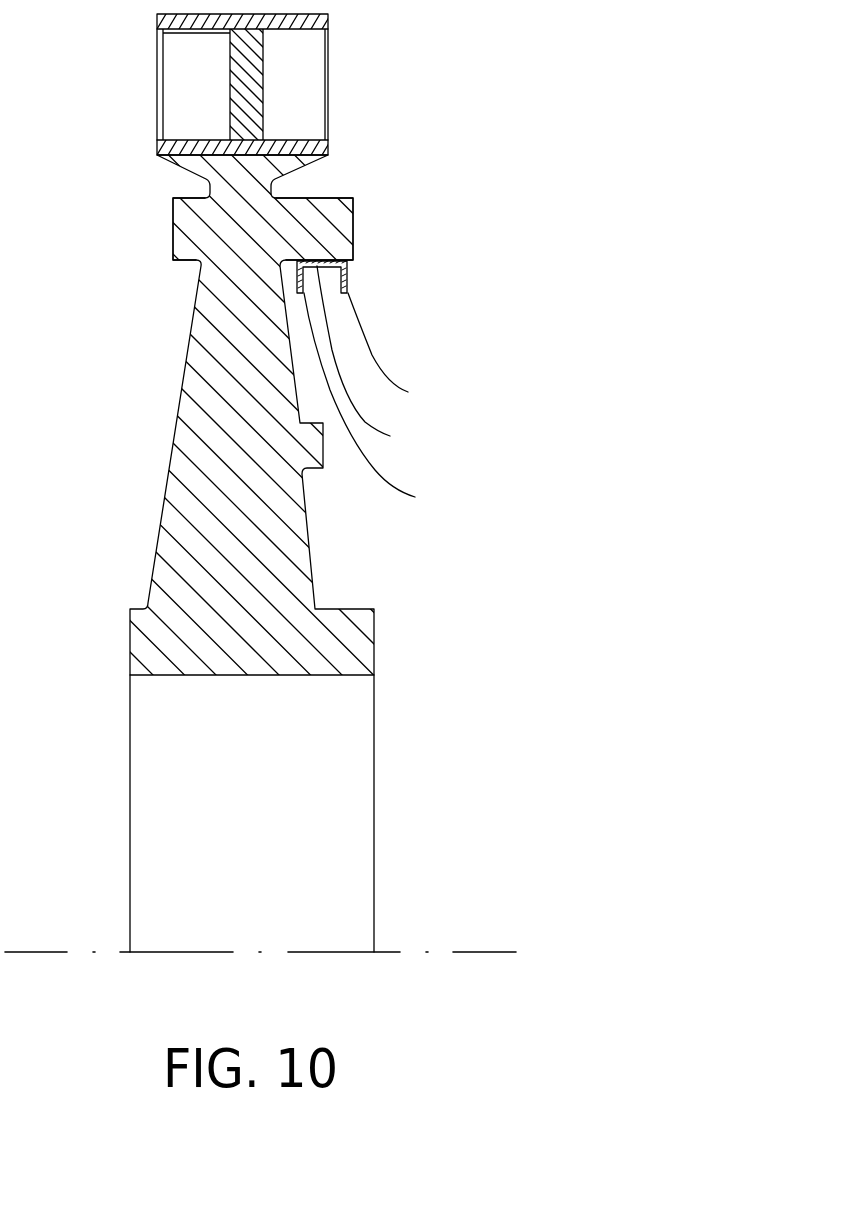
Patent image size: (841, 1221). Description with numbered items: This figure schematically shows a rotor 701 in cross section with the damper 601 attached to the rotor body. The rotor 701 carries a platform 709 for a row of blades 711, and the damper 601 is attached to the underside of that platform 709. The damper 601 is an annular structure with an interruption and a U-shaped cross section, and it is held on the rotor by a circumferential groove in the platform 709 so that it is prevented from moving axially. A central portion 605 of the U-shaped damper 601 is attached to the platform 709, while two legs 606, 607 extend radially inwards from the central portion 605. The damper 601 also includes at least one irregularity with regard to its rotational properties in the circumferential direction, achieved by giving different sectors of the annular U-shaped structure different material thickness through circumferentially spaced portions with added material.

The rotor 701 is at (188, 440).
The platform 709 is at (341, 225).
The row of blades 711 is at (178, 91).
The damper 601 is at (349, 278).
The central portion 605 is at (390, 436).
The leg 606 is at (415, 497).
The leg 607 is at (408, 392).